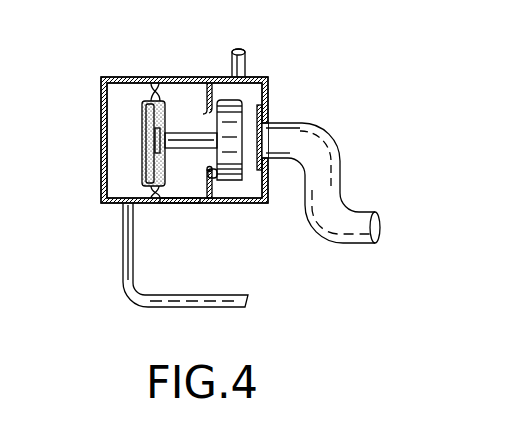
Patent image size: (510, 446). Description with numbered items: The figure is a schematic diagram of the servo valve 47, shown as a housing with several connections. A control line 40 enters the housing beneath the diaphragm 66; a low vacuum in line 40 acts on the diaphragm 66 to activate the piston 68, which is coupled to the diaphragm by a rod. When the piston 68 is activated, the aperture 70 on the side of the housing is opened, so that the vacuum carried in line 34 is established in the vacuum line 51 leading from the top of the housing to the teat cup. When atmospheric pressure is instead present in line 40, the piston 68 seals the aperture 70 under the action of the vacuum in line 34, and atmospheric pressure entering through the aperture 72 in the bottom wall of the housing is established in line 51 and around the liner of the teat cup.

The servo valve 47 is at (96, 149).
The diaphragm 66 is at (166, 78).
The vacuum line 51 is at (247, 63).
The piston 68 is at (240, 108).
The aperture 70 is at (253, 141).
The line 34 is at (341, 180).
The line 40 is at (203, 293).
The aperture 72 is at (181, 207).